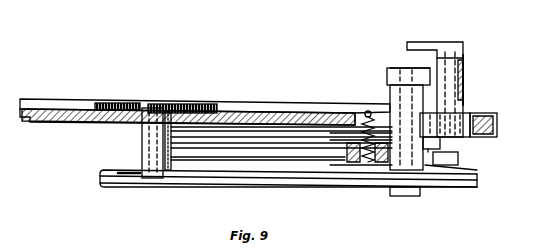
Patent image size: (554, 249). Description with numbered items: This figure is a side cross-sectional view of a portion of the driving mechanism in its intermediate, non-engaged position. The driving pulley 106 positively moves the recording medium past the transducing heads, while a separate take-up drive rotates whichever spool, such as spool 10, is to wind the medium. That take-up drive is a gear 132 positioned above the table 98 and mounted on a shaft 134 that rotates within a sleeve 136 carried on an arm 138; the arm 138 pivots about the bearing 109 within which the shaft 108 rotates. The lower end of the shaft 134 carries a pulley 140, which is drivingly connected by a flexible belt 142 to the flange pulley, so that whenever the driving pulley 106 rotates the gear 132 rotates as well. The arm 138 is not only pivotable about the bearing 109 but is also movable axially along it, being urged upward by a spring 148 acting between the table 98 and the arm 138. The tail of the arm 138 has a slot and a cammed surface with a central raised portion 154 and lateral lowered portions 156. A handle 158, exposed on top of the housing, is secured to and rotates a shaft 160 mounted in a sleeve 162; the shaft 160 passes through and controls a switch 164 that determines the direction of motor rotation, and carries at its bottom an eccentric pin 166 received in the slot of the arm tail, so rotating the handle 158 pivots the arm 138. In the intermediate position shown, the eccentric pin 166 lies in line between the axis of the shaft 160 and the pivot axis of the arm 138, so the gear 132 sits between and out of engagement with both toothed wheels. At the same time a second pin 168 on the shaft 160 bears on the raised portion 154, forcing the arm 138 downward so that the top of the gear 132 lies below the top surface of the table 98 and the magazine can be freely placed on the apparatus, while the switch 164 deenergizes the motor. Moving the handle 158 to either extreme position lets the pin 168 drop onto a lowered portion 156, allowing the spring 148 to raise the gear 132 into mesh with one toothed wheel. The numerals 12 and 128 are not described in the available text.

The spool 10 is at (476, 62).
The housing 12 is at (177, 0).
The table 98 is at (45, 112).
The driving pulley 106 is at (392, 72).
The shaft 108 is at (405, 70).
The bearing 109 is at (395, 97).
The mounting plate 128 is at (44, 107).
The gear 132 is at (108, 103).
The shaft 134 is at (156, 104).
The sleeve 136 is at (142, 147).
The arm 138 is at (263, 147).
The pulley 140 is at (185, 183).
The flexible belt 142 is at (291, 184).
The spring 148 is at (365, 113).
The central raised portion 154 is at (428, 148).
The lateral lowered portions 156 is at (457, 164).
The handle 158 is at (417, 42).
The shaft 160 is at (472, 84).
The sleeve 162 is at (467, 78).
The switch 164 is at (470, 111).
The eccentric pin 166 is at (450, 160).
The second pin 168 is at (441, 146).